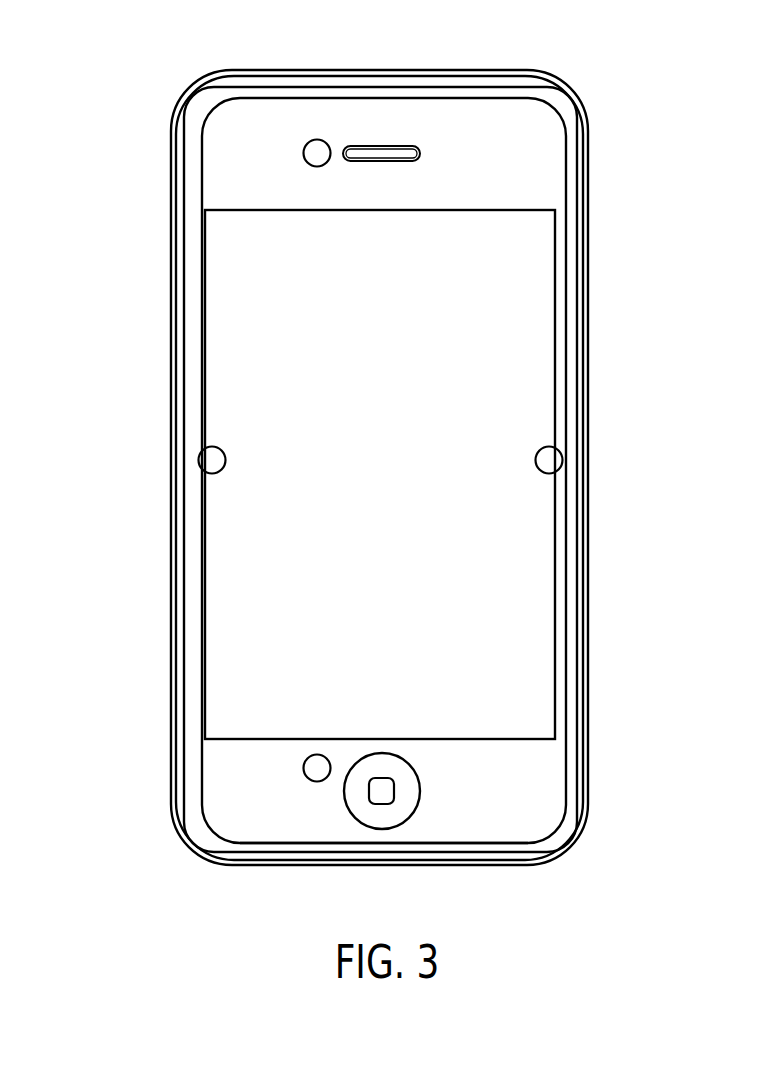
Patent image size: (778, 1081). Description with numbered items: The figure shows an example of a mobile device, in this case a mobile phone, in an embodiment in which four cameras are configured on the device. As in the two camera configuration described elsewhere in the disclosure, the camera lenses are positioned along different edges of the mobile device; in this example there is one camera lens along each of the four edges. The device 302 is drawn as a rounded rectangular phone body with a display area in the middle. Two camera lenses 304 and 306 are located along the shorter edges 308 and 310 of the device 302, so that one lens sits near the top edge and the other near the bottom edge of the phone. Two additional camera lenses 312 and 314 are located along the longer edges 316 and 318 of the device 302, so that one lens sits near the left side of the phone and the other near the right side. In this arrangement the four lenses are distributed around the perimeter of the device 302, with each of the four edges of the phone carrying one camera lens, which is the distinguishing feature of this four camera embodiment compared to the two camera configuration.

The device 302 is at (138, 63).
The camera lens 304 is at (314, 153).
The camera lens 306 is at (314, 768).
The shorter edge 308 is at (367, 81).
The shorter edge 310 is at (455, 853).
The camera lens 312 is at (214, 460).
The camera lens 314 is at (547, 459).
The longer edge 316 is at (192, 428).
The longer edge 318 is at (588, 530).